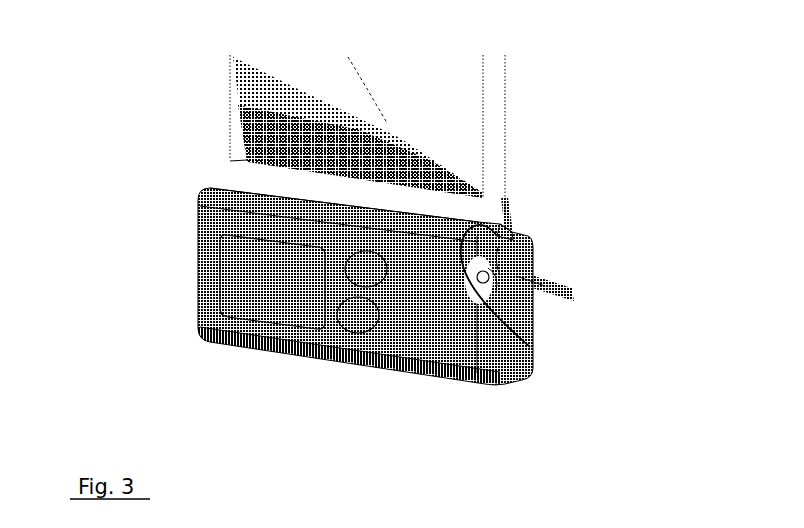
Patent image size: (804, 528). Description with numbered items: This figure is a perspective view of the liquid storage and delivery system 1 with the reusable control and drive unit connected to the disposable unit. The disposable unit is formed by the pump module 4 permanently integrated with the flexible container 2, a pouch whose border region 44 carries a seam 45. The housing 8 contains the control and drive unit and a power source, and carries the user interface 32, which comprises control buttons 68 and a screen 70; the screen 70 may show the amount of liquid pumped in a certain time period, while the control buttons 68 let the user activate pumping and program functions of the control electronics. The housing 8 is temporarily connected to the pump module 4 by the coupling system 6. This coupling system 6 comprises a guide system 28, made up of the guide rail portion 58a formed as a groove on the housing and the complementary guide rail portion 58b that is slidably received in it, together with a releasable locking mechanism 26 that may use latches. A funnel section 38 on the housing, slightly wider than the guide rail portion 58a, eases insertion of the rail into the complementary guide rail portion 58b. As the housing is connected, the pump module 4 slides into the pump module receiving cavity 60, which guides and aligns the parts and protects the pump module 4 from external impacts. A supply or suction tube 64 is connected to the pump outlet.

The liquid storage and delivery system 1 is at (668, 172).
The flexible container 2 is at (527, 143).
The pump module 4 is at (557, 271).
The coupling system 6 is at (520, 221).
The housing 8 is at (430, 404).
The releasable locking mechanism 26 is at (400, 205).
The guide system 28 is at (498, 247).
The user interface 32 is at (302, 360).
The funnel section 38 is at (432, 216).
The border region 44 is at (505, 187).
The seam 45 is at (494, 90).
The guide rail portion 58a is at (307, 195).
The complementary guide rail portion 58b is at (530, 347).
The pump module receiving cavity 60 is at (510, 257).
The supply or suction tube 64 is at (566, 295).
The control buttons 68 is at (362, 270).
The screen 70 is at (257, 302).